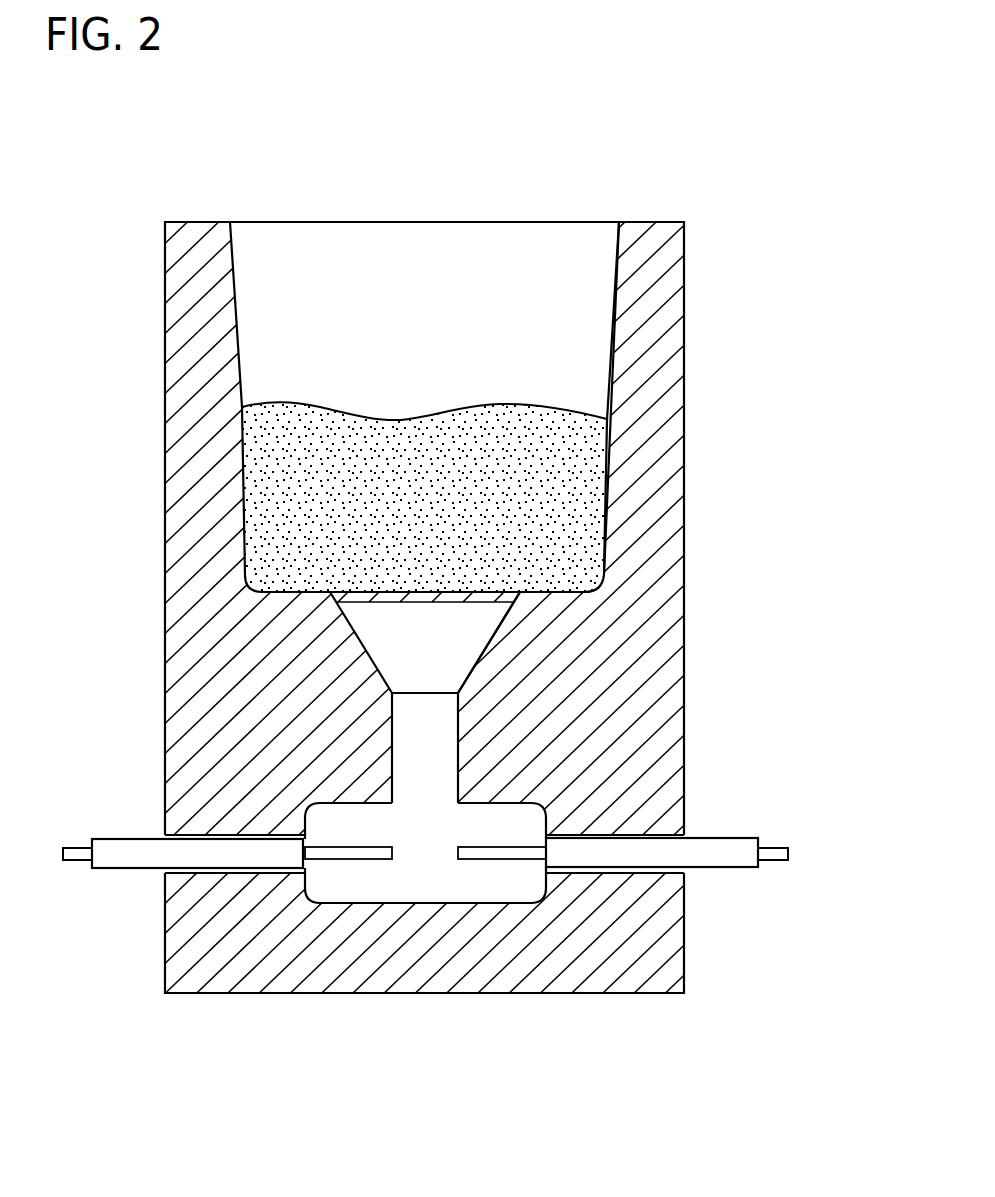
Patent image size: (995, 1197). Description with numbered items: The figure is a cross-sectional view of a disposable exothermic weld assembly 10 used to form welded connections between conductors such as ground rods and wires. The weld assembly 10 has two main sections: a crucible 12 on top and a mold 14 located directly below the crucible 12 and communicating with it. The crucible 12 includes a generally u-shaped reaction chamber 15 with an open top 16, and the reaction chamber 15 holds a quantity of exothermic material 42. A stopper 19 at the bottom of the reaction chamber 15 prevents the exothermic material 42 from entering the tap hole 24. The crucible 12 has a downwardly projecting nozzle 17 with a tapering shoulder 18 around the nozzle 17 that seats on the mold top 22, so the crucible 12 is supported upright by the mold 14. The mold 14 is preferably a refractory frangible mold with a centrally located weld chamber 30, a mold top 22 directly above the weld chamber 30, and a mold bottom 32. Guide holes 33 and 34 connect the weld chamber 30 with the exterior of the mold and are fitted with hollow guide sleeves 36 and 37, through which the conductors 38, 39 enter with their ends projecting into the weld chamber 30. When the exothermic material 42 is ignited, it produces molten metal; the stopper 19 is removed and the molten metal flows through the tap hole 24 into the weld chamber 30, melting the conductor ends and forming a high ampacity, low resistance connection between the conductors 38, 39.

The exothermic weld assembly 10 is at (118, 177).
The crucible 12 is at (790, 261).
The mold 14 is at (733, 1010).
The open top 16 is at (495, 222).
The reaction chamber 15 is at (607, 447).
The exothermic material 42 is at (350, 503).
The stopper 19 is at (473, 596).
The nozzle 17 is at (378, 623).
The tapering shoulder 18 is at (503, 620).
The tap hole 24 is at (459, 722).
The mold top 22 is at (459, 783).
The weld chamber 30 is at (423, 852).
The mold bottom 32 is at (518, 993).
The guide hole 33 is at (686, 803).
The guide hole 34 is at (204, 834).
The hollow guide sleeve 36 is at (709, 867).
The hollow guide sleeve 37 is at (143, 868).
The conductor 38 is at (777, 861).
The conductor 39 is at (73, 861).